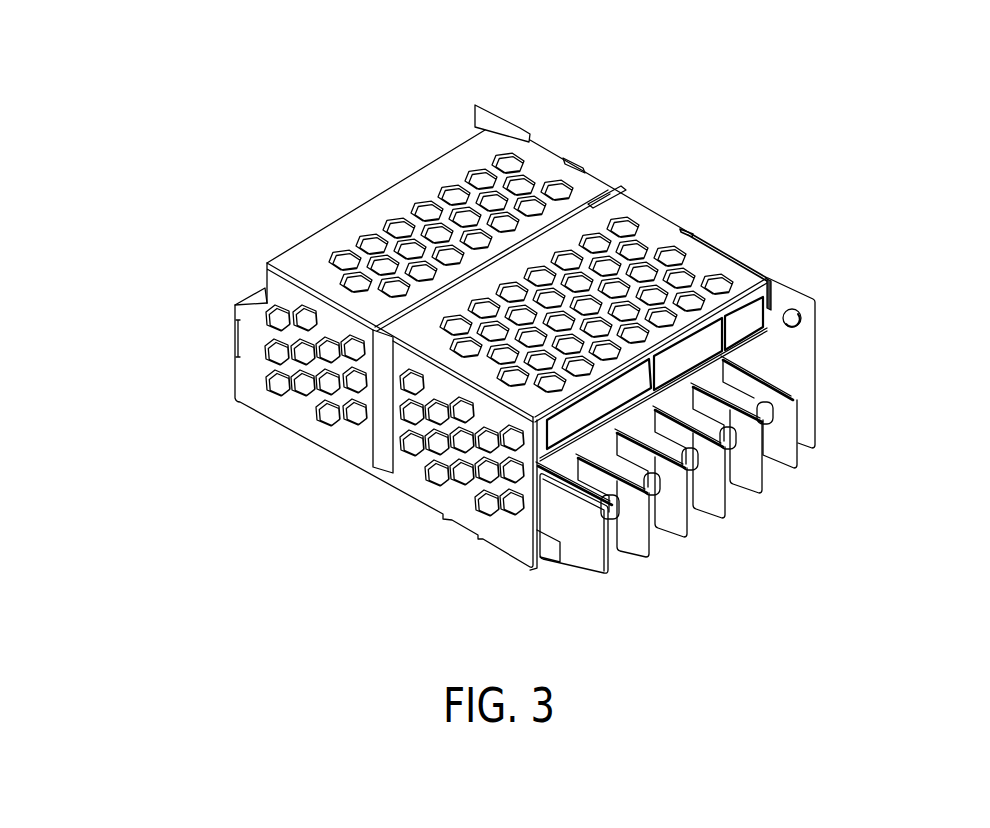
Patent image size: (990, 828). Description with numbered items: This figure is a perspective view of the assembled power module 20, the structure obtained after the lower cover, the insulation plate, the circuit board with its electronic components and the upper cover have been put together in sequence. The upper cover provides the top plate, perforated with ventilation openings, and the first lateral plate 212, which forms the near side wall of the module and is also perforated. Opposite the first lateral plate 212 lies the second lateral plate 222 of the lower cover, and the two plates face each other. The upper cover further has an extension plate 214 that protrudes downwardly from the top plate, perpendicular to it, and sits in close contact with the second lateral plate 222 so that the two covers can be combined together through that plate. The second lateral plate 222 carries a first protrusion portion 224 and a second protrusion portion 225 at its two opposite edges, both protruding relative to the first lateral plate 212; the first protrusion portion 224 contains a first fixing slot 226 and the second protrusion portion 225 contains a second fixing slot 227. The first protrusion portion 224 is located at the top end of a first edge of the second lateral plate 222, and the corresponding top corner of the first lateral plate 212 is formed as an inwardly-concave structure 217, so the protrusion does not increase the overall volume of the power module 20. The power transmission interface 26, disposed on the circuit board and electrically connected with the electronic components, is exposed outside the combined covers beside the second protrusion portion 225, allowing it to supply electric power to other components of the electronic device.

The power module 20 is at (966, 128).
The first lateral plate 212 is at (344, 443).
The extension plate 214 is at (771, 292).
The inwardly-concave structure 217 is at (265, 288).
The second lateral plate 222 is at (756, 257).
The first protrusion portion 224 is at (479, 108).
The second protrusion portion 225 is at (796, 357).
The first fixing slot 226 is at (477, 133).
The second fixing slot 227 is at (796, 308).
The power transmission interface 26 is at (742, 462).